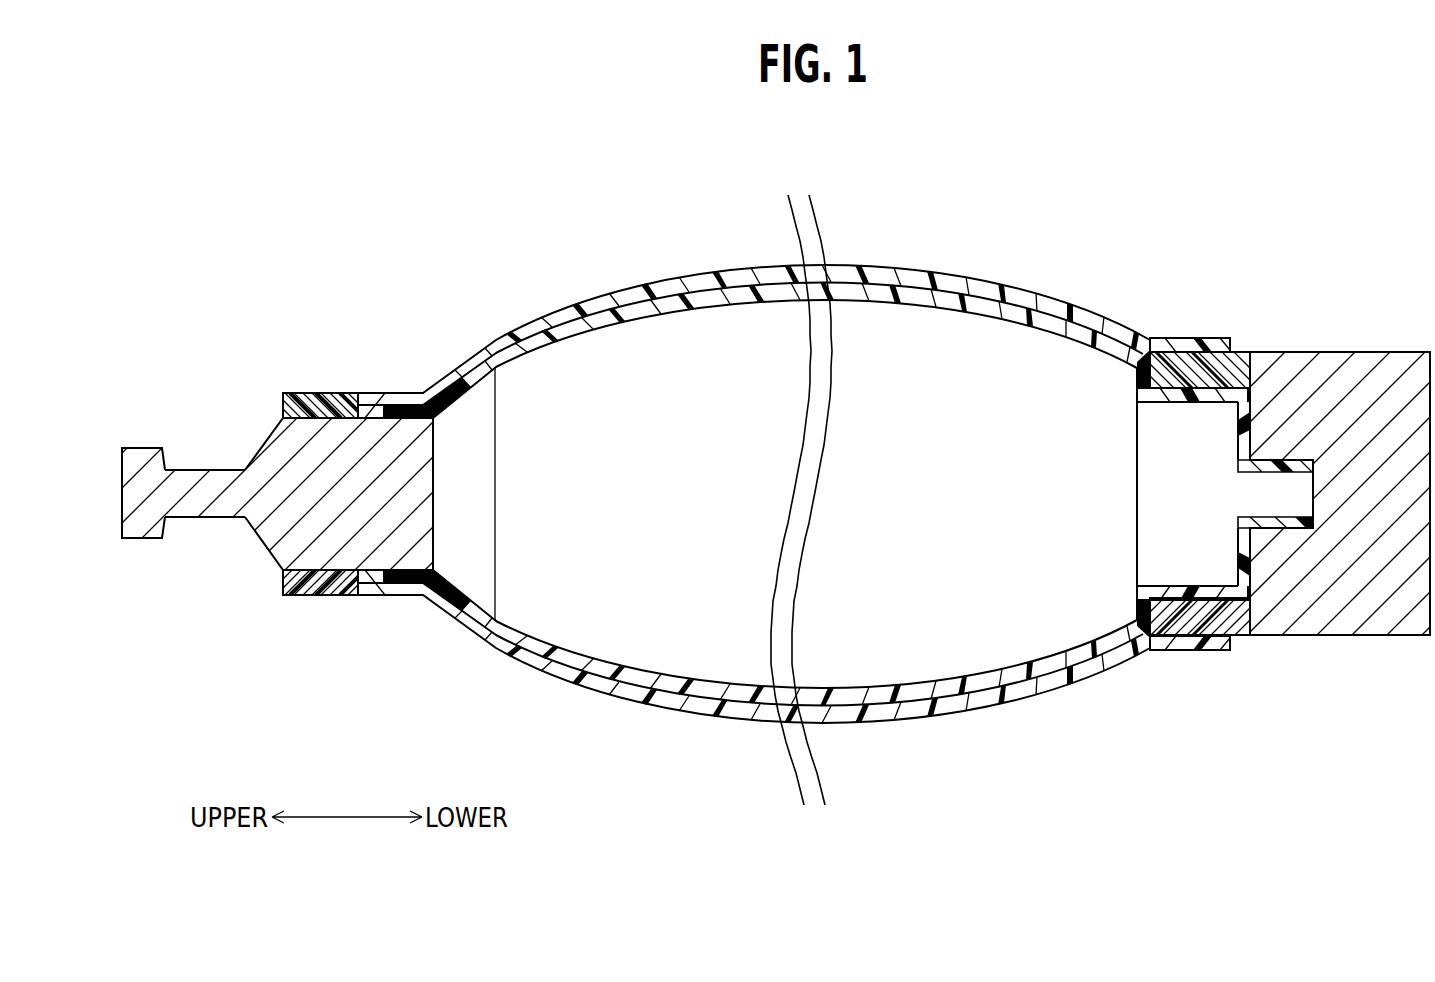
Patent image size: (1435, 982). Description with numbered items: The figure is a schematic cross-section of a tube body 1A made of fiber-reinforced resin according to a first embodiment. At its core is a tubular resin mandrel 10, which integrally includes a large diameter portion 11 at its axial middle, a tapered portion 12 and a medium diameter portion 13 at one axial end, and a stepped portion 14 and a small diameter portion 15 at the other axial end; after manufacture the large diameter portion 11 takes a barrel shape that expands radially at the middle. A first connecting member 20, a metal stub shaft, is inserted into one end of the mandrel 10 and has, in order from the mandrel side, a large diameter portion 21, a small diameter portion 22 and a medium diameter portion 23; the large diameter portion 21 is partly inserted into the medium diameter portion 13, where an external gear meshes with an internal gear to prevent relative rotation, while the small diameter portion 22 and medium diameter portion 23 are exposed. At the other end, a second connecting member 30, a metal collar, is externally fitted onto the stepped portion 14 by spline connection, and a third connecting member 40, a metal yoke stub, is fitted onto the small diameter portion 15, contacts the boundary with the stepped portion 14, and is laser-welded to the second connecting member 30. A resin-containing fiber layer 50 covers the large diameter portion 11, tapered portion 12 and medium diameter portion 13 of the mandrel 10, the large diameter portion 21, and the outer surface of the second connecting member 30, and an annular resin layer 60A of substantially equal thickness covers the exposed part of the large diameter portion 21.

The tube body 1A is at (1275, 185).
The mandrel 10 is at (1062, 328).
The large diameter portion 11 is at (1072, 660).
The tapered portion 12 is at (458, 625).
The medium diameter portion 13 is at (400, 578).
The stepped portion 14 is at (1208, 612).
The small diameter portion 15 is at (1283, 530).
The first connecting member 20 is at (288, 417).
The large diameter portion 21 is at (332, 453).
The small diameter portion 22 is at (202, 483).
The medium diameter portion 23 is at (152, 425).
The second connecting member 30 is at (1198, 338).
The third connecting member 40 is at (1317, 353).
The resin-containing fiber layer 50 is at (945, 287).
The resin layer 60A is at (282, 577).